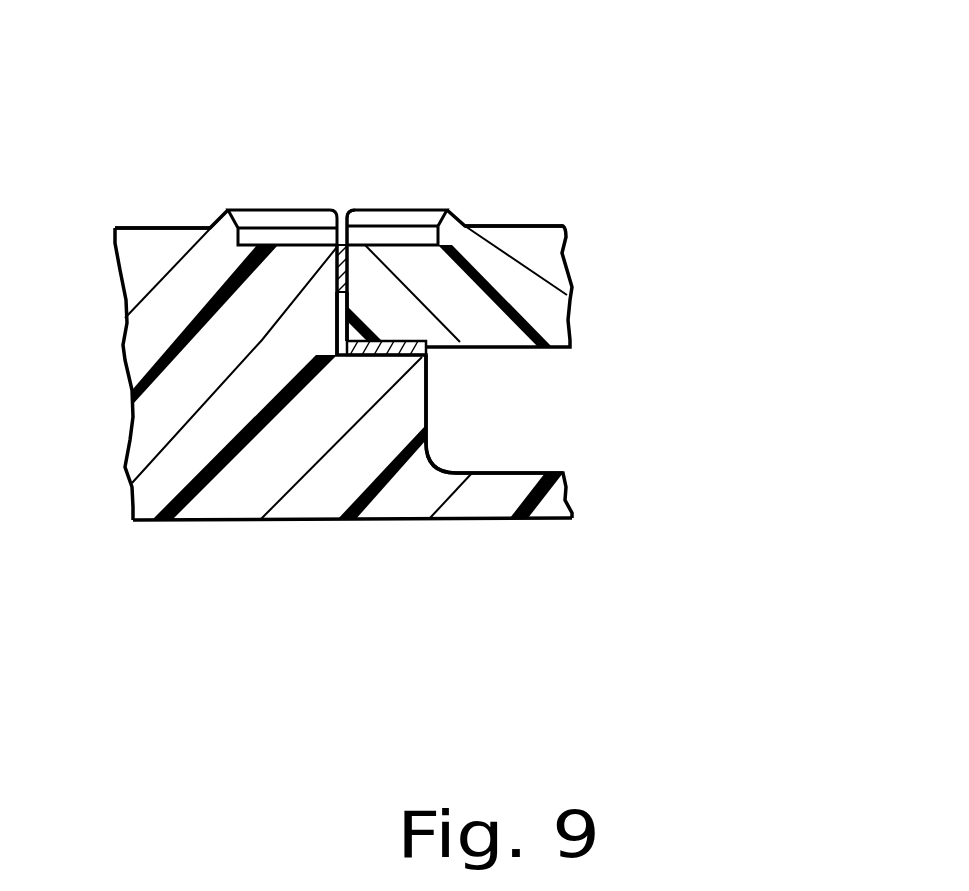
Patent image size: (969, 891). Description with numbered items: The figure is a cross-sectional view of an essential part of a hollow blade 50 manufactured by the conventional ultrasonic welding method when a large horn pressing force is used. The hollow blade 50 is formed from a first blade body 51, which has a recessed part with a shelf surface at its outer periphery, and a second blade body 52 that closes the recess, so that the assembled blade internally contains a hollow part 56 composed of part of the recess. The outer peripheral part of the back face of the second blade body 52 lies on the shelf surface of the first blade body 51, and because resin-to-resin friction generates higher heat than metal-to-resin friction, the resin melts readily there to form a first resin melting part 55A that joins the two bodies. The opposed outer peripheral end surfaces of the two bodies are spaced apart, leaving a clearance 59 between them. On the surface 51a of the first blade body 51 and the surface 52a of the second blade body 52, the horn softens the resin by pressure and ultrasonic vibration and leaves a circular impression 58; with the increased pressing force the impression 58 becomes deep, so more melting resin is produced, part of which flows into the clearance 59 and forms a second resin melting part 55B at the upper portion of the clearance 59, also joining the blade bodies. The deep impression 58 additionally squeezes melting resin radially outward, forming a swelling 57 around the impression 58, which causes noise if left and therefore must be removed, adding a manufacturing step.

The hollow blade 50 is at (112, 687).
The first blade body 51 is at (343, 451).
The surface of the first blade body 51a is at (146, 134).
The second blade body 52 is at (533, 194).
The surface of the second blade body 52a is at (657, 133).
The first resin melting part 55A is at (542, 400).
The second resin melting part 55B is at (365, 162).
The hollow part 56 is at (507, 687).
The swelling 57 is at (415, 138).
The impression 58 is at (430, 149).
The clearance 59 is at (772, 362).